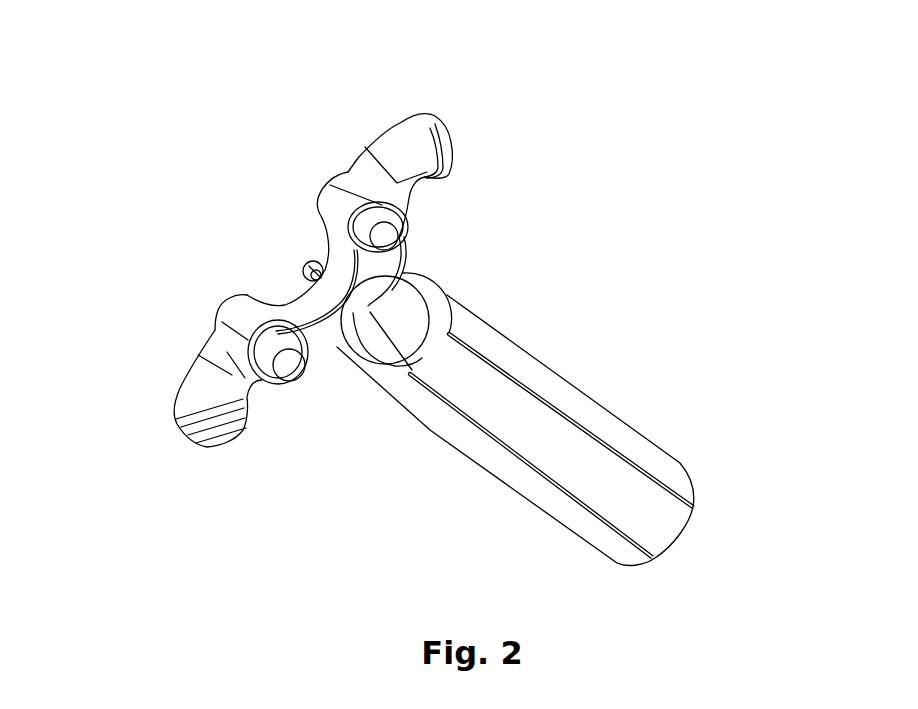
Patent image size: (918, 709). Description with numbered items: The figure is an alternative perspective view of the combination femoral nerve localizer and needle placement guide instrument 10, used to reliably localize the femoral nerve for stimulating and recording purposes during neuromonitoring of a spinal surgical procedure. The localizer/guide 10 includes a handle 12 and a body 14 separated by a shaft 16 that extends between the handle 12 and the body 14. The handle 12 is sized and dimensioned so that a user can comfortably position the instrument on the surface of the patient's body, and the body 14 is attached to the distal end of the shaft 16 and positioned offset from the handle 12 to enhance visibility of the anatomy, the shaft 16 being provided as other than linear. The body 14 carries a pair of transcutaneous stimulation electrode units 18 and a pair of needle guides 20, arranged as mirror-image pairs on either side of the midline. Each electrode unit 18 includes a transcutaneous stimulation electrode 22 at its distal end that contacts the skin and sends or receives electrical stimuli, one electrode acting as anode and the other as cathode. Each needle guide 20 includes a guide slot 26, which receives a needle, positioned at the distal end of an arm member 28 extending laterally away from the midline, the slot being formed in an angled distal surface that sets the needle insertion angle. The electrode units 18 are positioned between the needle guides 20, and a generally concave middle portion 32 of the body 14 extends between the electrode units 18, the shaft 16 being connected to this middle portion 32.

The combination femoral nerve localizer and needle placement guide instrument 10 is at (630, 155).
The handle 12 is at (580, 391).
The body 14 is at (133, 417).
The shaft 16 is at (307, 265).
The transcutaneous stimulation electrode unit 18 is at (318, 154).
The needle guide 20 is at (464, 103).
The transcutaneous stimulation electrode 22 is at (397, 248).
The guide slot 26 is at (447, 148).
The arm member 28 is at (385, 131).
The middle portion 32 is at (291, 302).